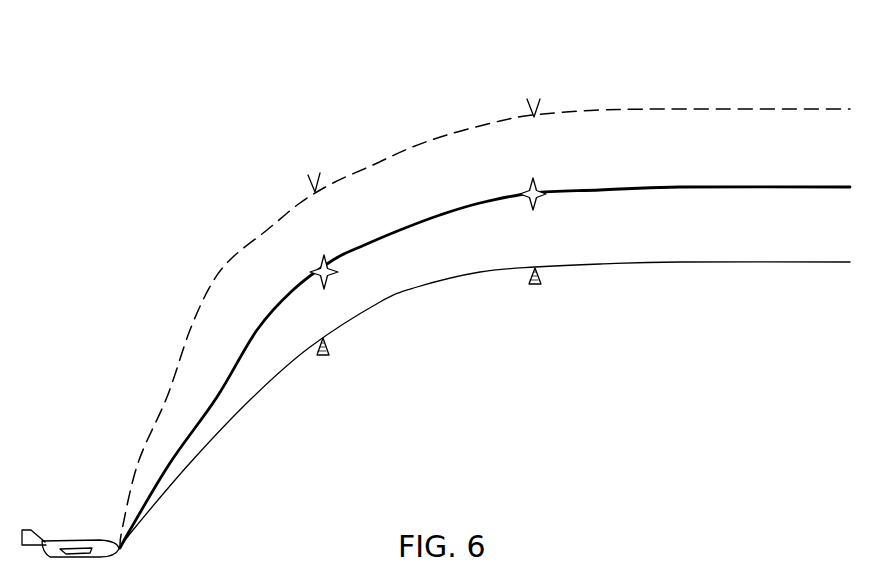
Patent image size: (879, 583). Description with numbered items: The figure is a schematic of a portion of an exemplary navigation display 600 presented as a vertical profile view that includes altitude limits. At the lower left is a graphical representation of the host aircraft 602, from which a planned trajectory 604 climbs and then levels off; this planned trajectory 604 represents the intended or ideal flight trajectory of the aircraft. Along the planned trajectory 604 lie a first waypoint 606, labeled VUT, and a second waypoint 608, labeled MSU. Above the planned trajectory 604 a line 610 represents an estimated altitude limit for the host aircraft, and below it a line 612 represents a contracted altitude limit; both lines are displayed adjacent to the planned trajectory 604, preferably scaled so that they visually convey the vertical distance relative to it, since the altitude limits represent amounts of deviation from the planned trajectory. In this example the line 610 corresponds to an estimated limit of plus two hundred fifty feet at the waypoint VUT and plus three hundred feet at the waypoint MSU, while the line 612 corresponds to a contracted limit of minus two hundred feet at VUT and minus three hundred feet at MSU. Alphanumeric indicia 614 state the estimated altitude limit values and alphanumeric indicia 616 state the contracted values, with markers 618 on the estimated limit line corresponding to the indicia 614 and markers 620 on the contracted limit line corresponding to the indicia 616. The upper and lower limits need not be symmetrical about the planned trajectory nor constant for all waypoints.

The navigation display 600 is at (436, 333).
The host aircraft 602 is at (89, 539).
The planned trajectory 604 is at (237, 352).
The first waypoint 606 is at (325, 256).
The second waypoint 608 is at (534, 179).
The line representing estimated altitude limit 610 is at (373, 165).
The line representing contracted altitude limit 612 is at (417, 287).
The alphanumeric indicia of the estimated altitude limit 614 is at (396, 91).
The alphanumeric indicia of the contracted altitude limit 616 is at (454, 373).
The markers corresponding to the estimated altitude limit indicia 618 is at (306, 183).
The markers corresponding to the contracted altitude limit indicia 620 is at (330, 350).